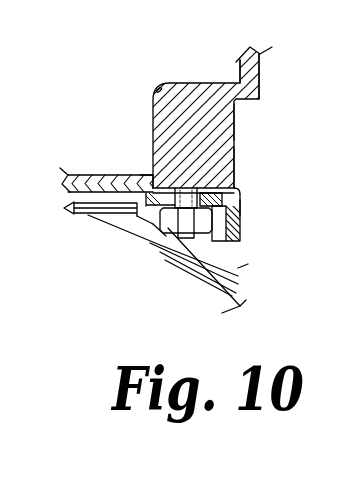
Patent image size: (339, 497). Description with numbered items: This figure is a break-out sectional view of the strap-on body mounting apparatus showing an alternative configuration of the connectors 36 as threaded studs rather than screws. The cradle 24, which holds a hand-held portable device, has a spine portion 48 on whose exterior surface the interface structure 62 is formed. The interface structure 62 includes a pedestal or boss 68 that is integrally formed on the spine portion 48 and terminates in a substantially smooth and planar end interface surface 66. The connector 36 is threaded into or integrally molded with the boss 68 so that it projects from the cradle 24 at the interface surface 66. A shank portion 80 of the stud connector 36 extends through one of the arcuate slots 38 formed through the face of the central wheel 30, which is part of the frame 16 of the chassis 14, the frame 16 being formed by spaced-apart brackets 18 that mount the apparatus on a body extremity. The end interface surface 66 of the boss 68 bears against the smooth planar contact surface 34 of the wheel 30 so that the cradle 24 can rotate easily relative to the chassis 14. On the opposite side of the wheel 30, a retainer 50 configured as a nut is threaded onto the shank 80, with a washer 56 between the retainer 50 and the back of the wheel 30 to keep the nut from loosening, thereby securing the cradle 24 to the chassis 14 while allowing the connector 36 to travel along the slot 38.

The chassis 14 is at (241, 191).
The frame 16 is at (242, 219).
The brackets 18 is at (243, 267).
The cradle 24 is at (263, 87).
The central wheel 30 is at (66, 204).
The contact surface 34 is at (234, 160).
The connectors 36 is at (169, 243).
The slots 38 is at (161, 187).
The spine portion 48 is at (68, 177).
The retainers 50 is at (153, 236).
The washers 56 is at (153, 225).
The interface structure 62 is at (157, 137).
The interface surfaces 66 is at (242, 208).
The bosses 68 is at (234, 125).
The shank portion 80 is at (192, 243).